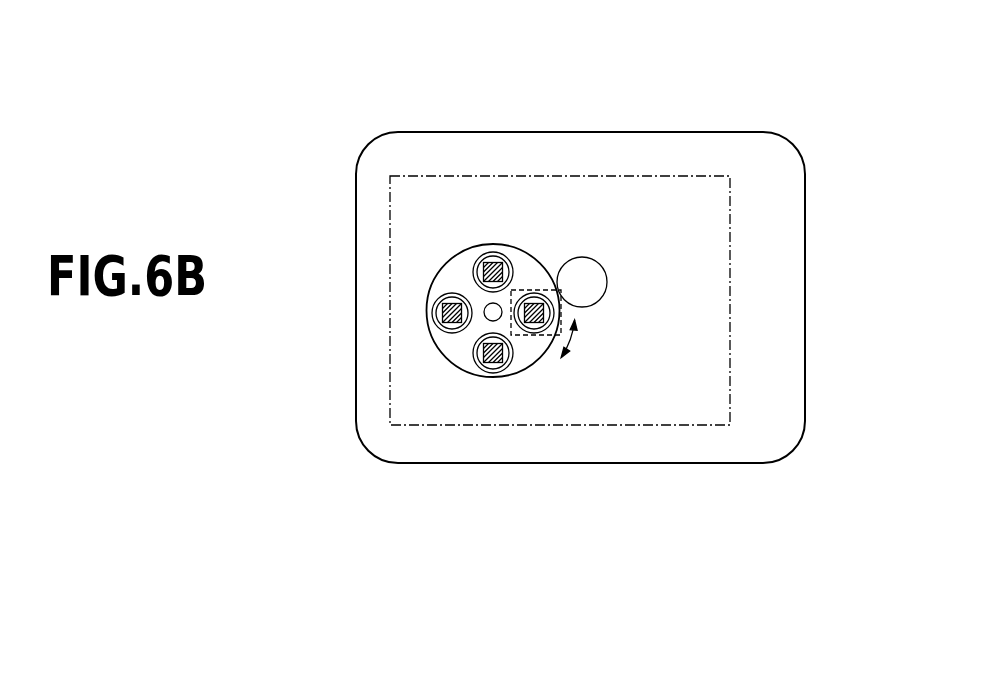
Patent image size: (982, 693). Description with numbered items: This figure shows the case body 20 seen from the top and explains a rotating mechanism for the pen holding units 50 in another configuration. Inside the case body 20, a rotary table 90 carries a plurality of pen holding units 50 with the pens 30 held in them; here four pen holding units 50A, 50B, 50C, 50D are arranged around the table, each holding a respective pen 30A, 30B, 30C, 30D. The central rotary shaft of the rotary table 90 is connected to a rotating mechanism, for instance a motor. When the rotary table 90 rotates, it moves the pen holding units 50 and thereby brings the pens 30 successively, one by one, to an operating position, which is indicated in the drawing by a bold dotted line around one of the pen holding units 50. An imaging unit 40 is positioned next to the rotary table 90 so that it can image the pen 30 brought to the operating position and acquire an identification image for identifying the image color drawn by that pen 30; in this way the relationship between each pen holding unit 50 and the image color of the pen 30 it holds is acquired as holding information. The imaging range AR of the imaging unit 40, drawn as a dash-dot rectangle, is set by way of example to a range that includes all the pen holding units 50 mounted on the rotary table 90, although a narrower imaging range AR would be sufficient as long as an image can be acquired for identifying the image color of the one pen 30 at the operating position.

The case body 20 is at (793, 92).
The imaging range AR is at (673, 176).
The imaging unit 40 is at (582, 267).
The rotary table 90 is at (533, 348).
The pens 30 is at (468, 296).
The pen holding units 50 is at (468, 296).
The pen 30A is at (534, 301).
The pen 30B is at (492, 262).
The pen 30C is at (434, 310).
The pen 30D is at (494, 373).
The pen holding unit 50A is at (577, 183).
The pen holding unit 50B is at (421, 163).
The pen holding unit 50C is at (367, 301).
The pen holding unit 50D is at (449, 446).